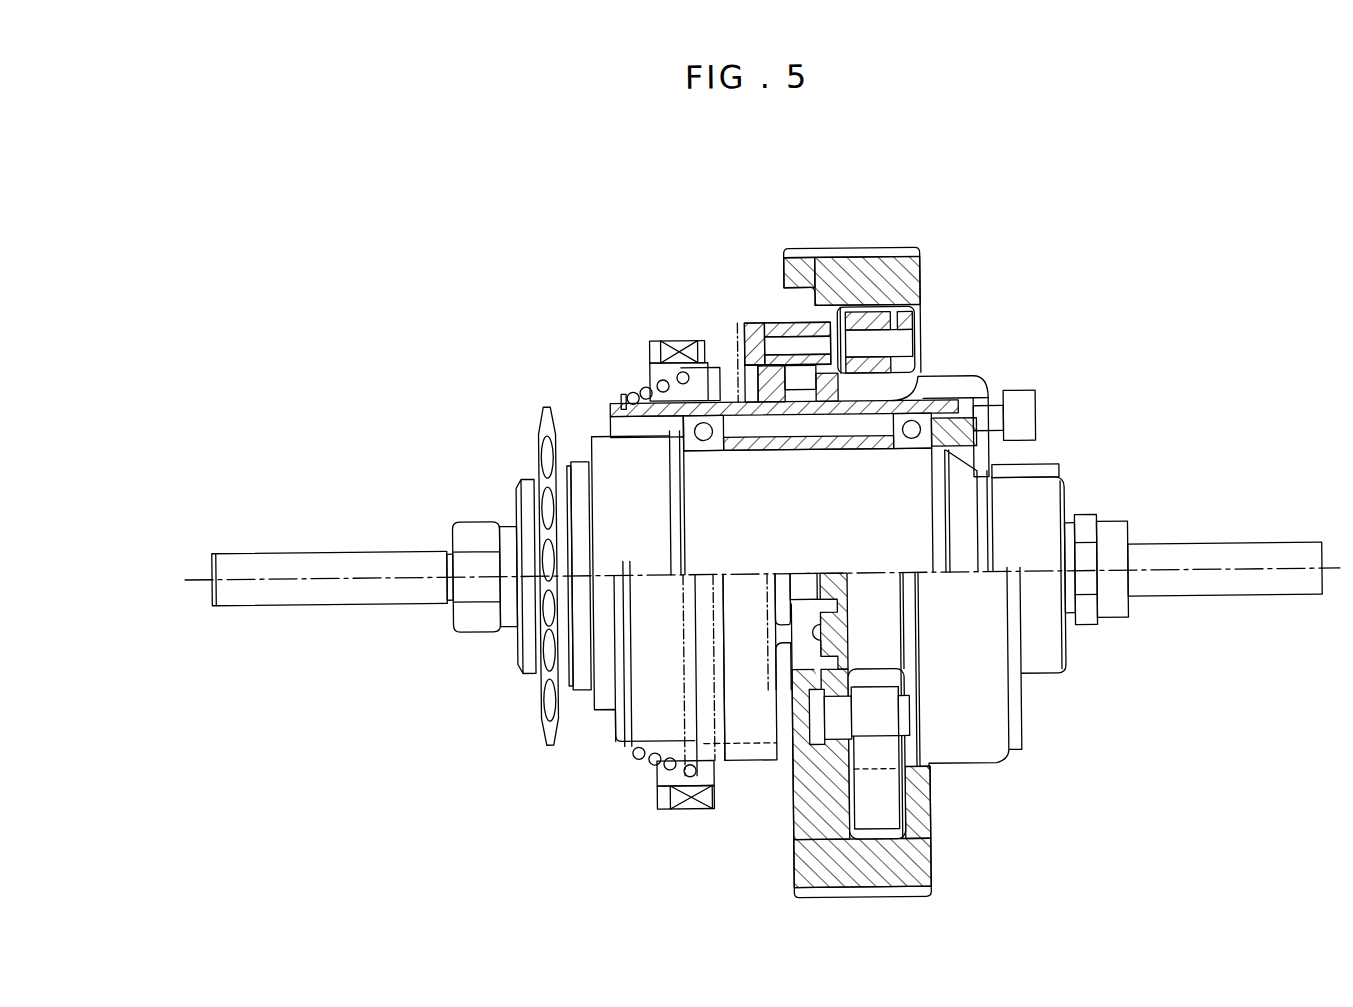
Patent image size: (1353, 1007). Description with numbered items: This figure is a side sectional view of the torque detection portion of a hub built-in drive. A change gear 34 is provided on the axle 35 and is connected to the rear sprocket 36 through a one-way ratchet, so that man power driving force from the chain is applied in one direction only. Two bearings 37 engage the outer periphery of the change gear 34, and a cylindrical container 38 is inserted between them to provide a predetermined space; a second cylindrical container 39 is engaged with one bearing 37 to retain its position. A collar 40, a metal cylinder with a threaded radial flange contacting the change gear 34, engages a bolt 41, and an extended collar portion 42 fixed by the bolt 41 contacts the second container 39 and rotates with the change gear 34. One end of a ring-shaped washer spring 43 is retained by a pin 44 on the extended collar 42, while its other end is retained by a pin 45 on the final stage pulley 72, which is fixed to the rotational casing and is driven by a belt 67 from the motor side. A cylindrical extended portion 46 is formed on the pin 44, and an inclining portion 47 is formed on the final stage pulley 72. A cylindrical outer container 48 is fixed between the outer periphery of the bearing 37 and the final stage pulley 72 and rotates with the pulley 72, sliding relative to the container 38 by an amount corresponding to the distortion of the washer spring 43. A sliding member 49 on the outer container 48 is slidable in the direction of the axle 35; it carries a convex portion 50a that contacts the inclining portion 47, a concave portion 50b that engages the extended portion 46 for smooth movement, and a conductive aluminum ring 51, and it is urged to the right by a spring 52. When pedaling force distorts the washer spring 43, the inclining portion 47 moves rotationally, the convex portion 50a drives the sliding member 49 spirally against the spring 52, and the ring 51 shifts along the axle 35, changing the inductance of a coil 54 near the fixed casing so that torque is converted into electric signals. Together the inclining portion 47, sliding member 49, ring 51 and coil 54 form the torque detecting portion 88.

The change gear 34 is at (992, 750).
The axle 35 is at (318, 548).
The rear sprocket 36 is at (538, 443).
The bearings 37 is at (705, 452).
The cylindrical container 38 is at (775, 452).
The second cylindrical container 39 is at (990, 395).
The collar 40 is at (1058, 462).
The bolt 41 is at (1037, 420).
The extended collar portion 42 is at (967, 373).
The washer spring 43 is at (858, 313).
The pin 44 is at (902, 337).
The pin 45 is at (887, 703).
The cylindrical extended portion 46 is at (790, 337).
The inclining portion 47 is at (813, 637).
The cylindrical outer container 48 is at (810, 420).
The sliding member 49 is at (745, 728).
The convex portion 50a is at (783, 590).
The concave portion 50b is at (748, 327).
The aluminum ring 51 is at (708, 768).
The spring 52 is at (635, 757).
The coil 54 is at (685, 808).
The belt 67 is at (890, 247).
The final stage pulley 72 is at (925, 278).
The torque detecting portion 88 is at (643, 825).